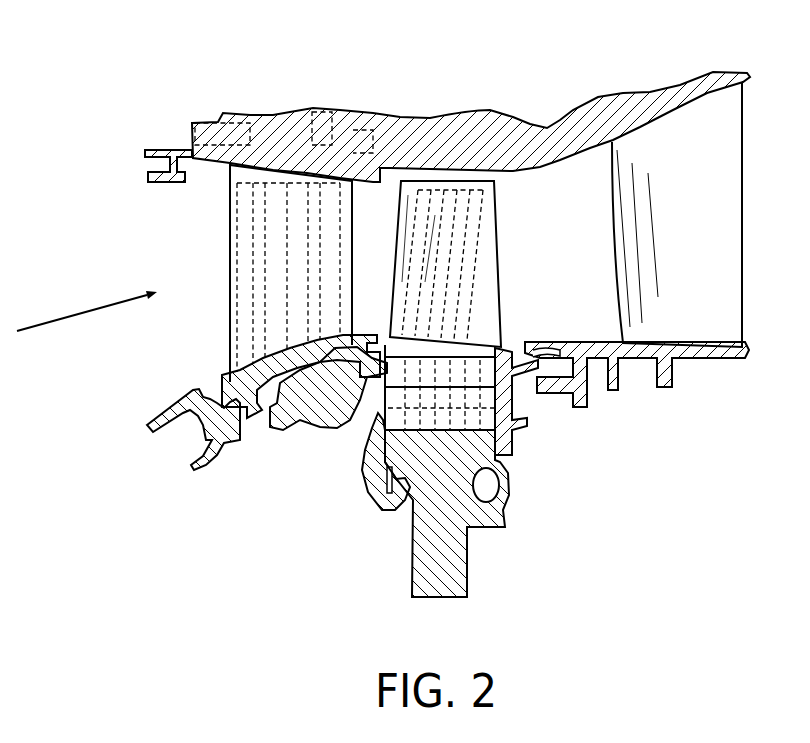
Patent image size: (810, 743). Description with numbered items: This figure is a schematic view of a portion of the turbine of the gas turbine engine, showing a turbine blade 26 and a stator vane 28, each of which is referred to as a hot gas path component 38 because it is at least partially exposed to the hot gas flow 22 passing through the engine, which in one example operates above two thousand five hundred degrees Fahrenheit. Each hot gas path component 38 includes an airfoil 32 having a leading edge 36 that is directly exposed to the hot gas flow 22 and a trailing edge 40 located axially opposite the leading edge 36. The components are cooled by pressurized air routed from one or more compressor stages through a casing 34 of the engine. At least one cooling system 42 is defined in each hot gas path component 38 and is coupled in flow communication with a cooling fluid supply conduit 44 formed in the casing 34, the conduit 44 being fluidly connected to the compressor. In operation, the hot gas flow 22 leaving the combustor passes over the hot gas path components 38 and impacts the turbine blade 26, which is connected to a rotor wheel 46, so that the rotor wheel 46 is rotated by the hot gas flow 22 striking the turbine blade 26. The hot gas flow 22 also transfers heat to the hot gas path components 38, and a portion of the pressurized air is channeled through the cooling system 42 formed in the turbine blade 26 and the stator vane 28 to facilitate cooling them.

The hot gas flow 22 is at (68, 317).
The turbine blade 26 is at (511, 339).
The stator vane 28 is at (217, 370).
The airfoil 32 is at (347, 193).
The casing 34 is at (273, 116).
The leading edge 36 is at (230, 200).
The hot gas path component 38 is at (382, 293).
The trailing edge 40 is at (353, 226).
The cooling system 42 is at (326, 187).
The cooling fluid supply conduit 44 is at (254, 445).
The rotor wheel 46 is at (468, 556).